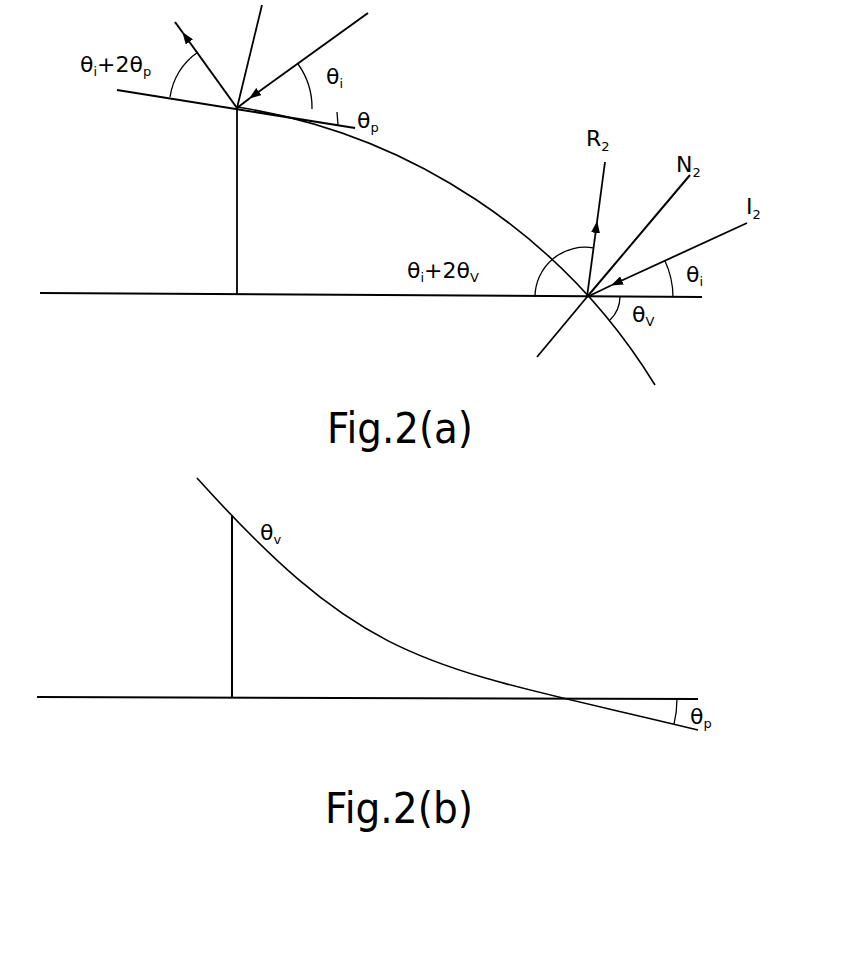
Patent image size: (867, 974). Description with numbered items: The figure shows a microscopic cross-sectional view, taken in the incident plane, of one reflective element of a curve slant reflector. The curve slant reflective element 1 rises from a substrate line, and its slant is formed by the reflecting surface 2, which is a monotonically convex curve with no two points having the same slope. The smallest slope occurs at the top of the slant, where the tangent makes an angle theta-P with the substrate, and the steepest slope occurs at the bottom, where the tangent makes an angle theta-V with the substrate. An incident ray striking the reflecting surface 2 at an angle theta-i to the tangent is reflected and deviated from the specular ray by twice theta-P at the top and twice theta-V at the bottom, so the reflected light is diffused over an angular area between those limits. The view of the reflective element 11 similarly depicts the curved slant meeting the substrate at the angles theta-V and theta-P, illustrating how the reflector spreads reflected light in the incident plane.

In FIG. 2A, the curve slant reflective element 1 is at (257, 213).
In FIG. 2A, the reflecting surface 2 is at (403, 157).
In FIG. 2B, the reflecting surface 2 is at (420, 653).
In FIG. 2B, the light guide plate 11 is at (253, 617).